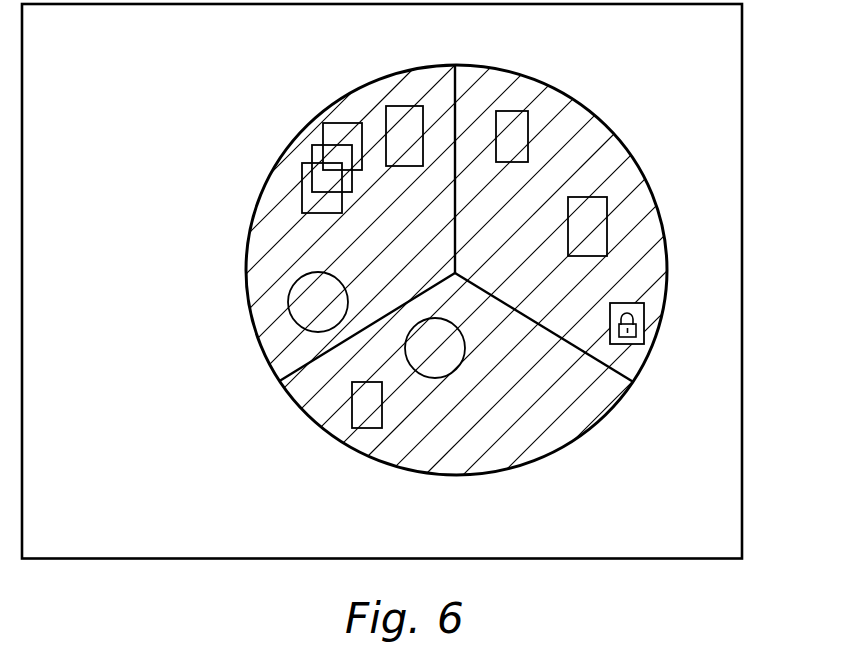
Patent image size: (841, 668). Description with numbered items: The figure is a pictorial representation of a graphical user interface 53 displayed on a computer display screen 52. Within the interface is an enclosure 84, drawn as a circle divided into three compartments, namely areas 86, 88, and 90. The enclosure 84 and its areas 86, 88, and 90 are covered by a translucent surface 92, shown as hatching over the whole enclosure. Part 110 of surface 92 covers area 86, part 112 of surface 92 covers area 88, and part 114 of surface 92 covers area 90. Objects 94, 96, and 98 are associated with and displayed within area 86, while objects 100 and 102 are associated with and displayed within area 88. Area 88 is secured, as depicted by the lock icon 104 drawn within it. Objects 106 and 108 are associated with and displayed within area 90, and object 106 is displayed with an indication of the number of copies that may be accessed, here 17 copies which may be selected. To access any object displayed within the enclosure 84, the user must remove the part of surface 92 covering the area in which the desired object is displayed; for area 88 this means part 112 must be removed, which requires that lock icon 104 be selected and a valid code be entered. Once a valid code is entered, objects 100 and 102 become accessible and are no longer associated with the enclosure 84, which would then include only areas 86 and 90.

The computer display screen 52 is at (742, 63).
The graphical user interface 53 is at (110, 75).
The enclosure 84 is at (573, 103).
The area 86 is at (268, 311).
The area 88 is at (632, 162).
The area 90 is at (613, 386).
The translucent surface 92 is at (602, 418).
The object 94 is at (307, 154).
The object 96 is at (406, 106).
The object 98 is at (288, 300).
The object 100 is at (508, 111).
The object 102 is at (607, 212).
The lock icon 104 is at (644, 327).
The object 106 is at (352, 428).
The object 108 is at (457, 378).
The part of surface 110 is at (283, 360).
The part of surface 112 is at (618, 140).
The part of surface 114 is at (488, 452).
The copies of object 17 is at (367, 371).